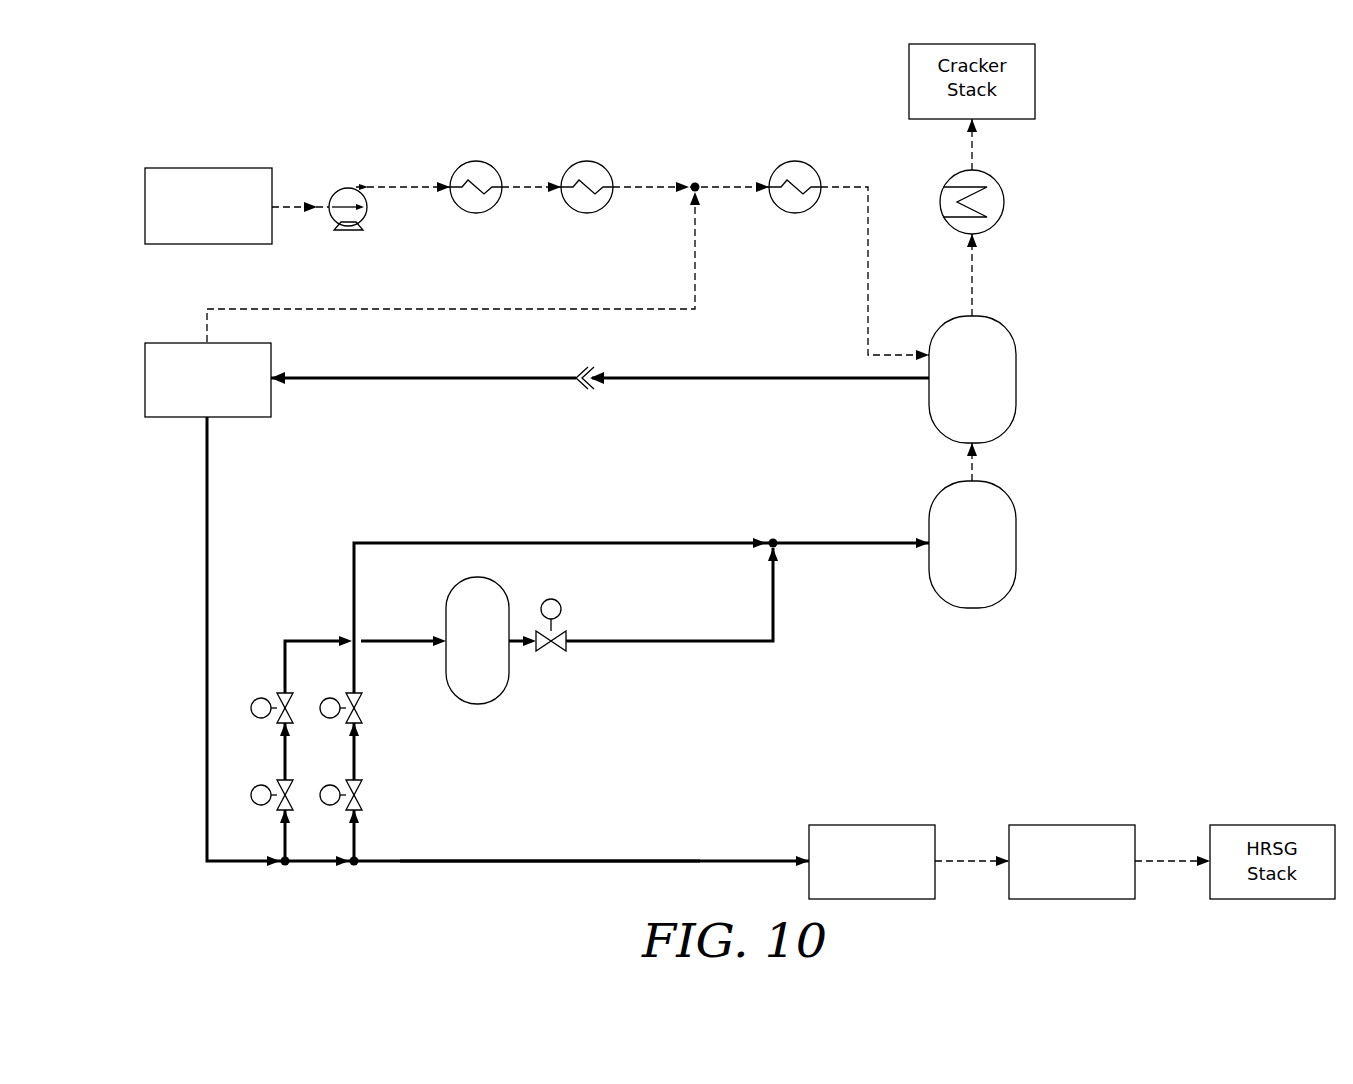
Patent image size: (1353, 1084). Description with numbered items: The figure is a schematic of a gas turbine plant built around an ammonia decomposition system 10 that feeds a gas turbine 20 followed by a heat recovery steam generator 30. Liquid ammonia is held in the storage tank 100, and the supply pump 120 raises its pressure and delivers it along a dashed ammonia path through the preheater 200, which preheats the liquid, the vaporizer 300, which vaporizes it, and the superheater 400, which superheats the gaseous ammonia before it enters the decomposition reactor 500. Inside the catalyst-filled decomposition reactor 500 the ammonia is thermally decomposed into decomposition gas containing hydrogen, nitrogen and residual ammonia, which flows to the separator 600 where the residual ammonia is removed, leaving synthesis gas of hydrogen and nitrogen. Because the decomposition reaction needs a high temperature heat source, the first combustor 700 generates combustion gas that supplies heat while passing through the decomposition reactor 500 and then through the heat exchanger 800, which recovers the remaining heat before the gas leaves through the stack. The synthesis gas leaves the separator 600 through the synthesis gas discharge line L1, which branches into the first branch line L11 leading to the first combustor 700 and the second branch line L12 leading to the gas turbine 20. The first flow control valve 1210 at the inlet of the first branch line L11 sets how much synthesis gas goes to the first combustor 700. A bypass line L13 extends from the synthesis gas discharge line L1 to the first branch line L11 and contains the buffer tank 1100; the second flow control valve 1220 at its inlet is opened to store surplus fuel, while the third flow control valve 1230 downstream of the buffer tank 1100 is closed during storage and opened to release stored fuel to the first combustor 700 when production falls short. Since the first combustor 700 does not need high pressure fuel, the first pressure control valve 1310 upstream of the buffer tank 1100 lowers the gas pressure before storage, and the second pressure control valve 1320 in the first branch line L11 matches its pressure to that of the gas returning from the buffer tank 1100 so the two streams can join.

The ammonia decomposition system 10 is at (1165, 166).
The storage tank 100 is at (212, 168).
The supply pump 120 is at (350, 188).
The preheater 200 is at (474, 161).
The vaporizer 300 is at (585, 161).
The superheater 400 is at (793, 161).
The decomposition reactor 500 is at (1016, 378).
The separator 600 is at (145, 378).
The first combustor 700 is at (1016, 543).
The heat exchanger 800 is at (1004, 200).
The buffer tank 1100 is at (475, 577).
The first flow control valve 1210 is at (358, 726).
The second flow control valve 1220 is at (283, 726).
The third flow control valve 1230 is at (566, 631).
The first pressure control valve 1310 is at (283, 814).
The second pressure control valve 1320 is at (358, 814).
The synthesis gas discharge line L1 is at (207, 592).
The first branch line L11 is at (660, 541).
The second branch line L12 is at (616, 863).
The bypass line L13 is at (660, 645).
The gas turbine 20 is at (870, 899).
The heat recovery steam generator 30 is at (1075, 899).